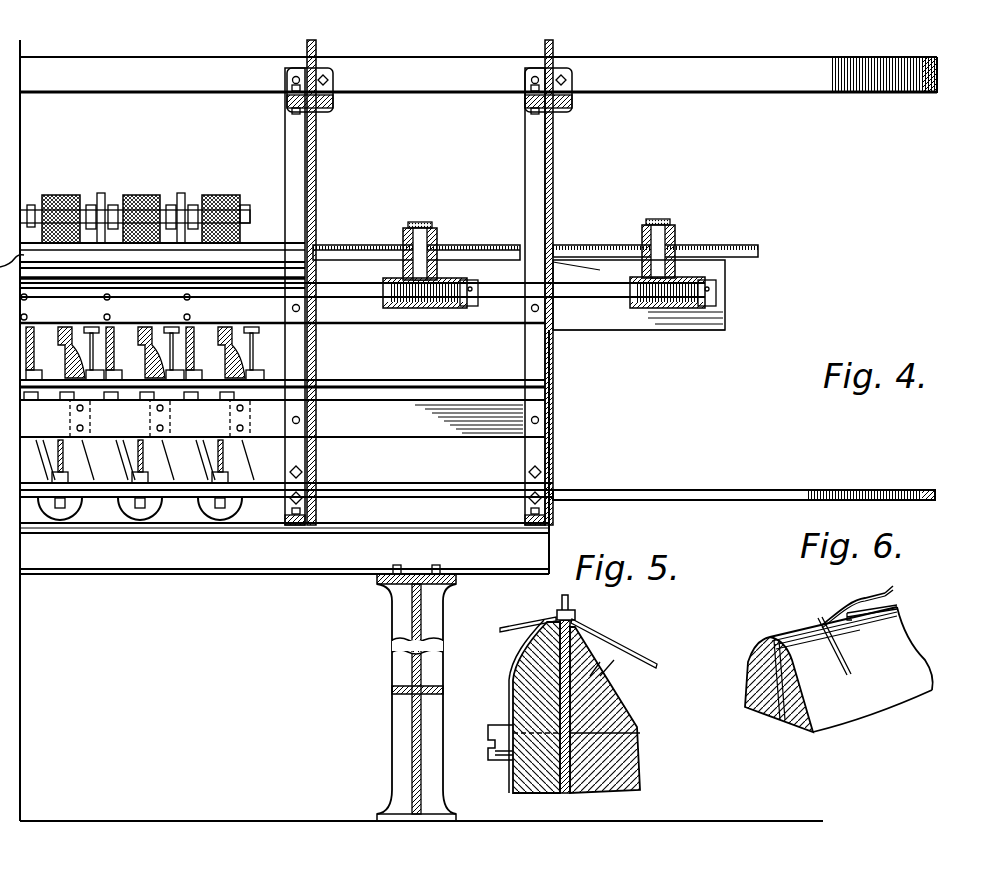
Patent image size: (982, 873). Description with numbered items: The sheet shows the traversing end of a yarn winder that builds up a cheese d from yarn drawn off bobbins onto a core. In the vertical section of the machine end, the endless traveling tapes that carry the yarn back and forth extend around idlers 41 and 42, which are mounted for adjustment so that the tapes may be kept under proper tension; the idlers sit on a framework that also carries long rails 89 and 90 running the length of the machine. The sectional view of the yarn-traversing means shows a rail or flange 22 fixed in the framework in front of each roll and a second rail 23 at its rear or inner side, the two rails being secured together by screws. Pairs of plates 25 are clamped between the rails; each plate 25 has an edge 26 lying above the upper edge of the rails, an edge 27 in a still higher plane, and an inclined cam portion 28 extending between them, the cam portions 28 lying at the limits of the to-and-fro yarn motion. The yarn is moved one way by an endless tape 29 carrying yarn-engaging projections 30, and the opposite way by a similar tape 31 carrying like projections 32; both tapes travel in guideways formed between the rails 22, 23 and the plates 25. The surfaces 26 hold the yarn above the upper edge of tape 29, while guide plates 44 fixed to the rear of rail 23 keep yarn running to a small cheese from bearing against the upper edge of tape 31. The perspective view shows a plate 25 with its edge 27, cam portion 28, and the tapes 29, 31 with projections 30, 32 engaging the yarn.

In FIG. 4, the cheese d is at (137, 195).
In FIG. 4, the idler 41 is at (752, 244).
In FIG. 4, the idler 42 is at (492, 245).
In FIG. 4, the top rail 89 is at (938, 80).
In FIG. 4, the lower rail 90 is at (932, 490).
In FIG. 5, the rail 22 is at (645, 700).
In FIG. 6, the rail 22 is at (850, 714).
In FIG. 5, the rail 23 is at (520, 700).
In FIG. 5, the plate 25 is at (638, 735).
In FIG. 5, the edge 26 is at (595, 631).
In FIG. 6, the edge 27 is at (890, 588).
In FIG. 5, the cam portion 28 is at (560, 598).
In FIG. 6, the cam portion 28 is at (826, 617).
In FIG. 5, the endless traveling tape 29 is at (610, 670).
In FIG. 6, the endless traveling tape 29 is at (893, 612).
In FIG. 5, the yarn-engaging projection 30 is at (576, 614).
In FIG. 6, the yarn-engaging projection 30 is at (840, 632).
In FIG. 5, the endless tape 31 is at (553, 640).
In FIG. 5, the projection 32 is at (558, 614).
In FIG. 6, the projection 32 is at (800, 625).
In FIG. 5, the guide plate 44 is at (516, 666).